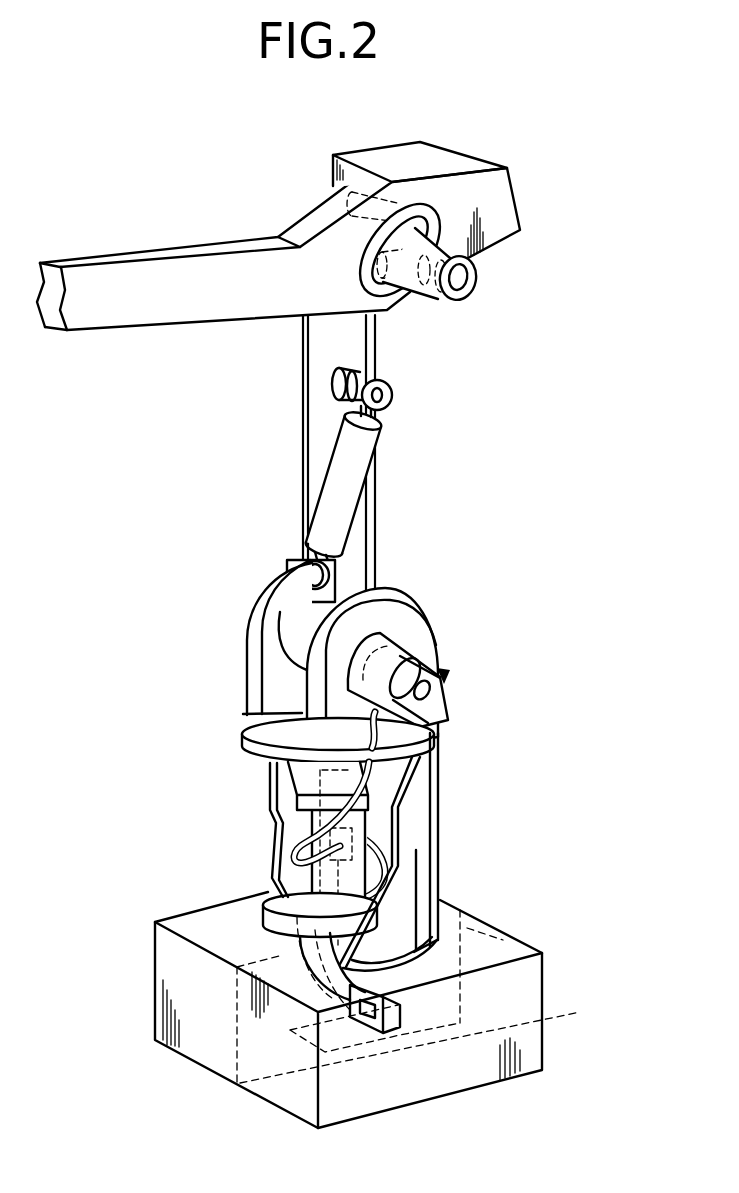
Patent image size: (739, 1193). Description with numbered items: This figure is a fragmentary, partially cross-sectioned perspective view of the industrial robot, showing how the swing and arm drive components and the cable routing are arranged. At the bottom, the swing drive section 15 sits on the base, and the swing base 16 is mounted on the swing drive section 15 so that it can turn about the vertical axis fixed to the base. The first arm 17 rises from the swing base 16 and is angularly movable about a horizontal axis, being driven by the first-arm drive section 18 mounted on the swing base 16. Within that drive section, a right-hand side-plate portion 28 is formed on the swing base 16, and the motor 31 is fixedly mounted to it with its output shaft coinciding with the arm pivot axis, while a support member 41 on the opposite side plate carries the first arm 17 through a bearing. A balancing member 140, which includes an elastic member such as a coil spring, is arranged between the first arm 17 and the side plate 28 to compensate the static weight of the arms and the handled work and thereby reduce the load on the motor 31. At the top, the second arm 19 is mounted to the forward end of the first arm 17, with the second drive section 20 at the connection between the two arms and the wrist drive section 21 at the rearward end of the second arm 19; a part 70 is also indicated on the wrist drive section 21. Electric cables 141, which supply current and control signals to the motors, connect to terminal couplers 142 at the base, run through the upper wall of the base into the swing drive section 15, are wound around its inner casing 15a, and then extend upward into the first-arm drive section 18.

The swing drive section 15 is at (355, 852).
The inner casing 15a is at (272, 808).
The swing base 16 is at (247, 732).
The first arm 17 is at (318, 404).
The first-arm drive section 18 is at (361, 644).
The second arm 19 is at (203, 248).
The second drive section 20 is at (499, 256).
The wrist drive section 21 is at (428, 173).
The right-hand side-plate portion 28 is at (408, 618).
The motor 31 is at (447, 674).
The support member 41 is at (258, 615).
The block top plate 70 is at (363, 160).
The balancing member 140 is at (386, 450).
The electric cables 141 is at (270, 856).
The terminal couplers 142 is at (432, 996).